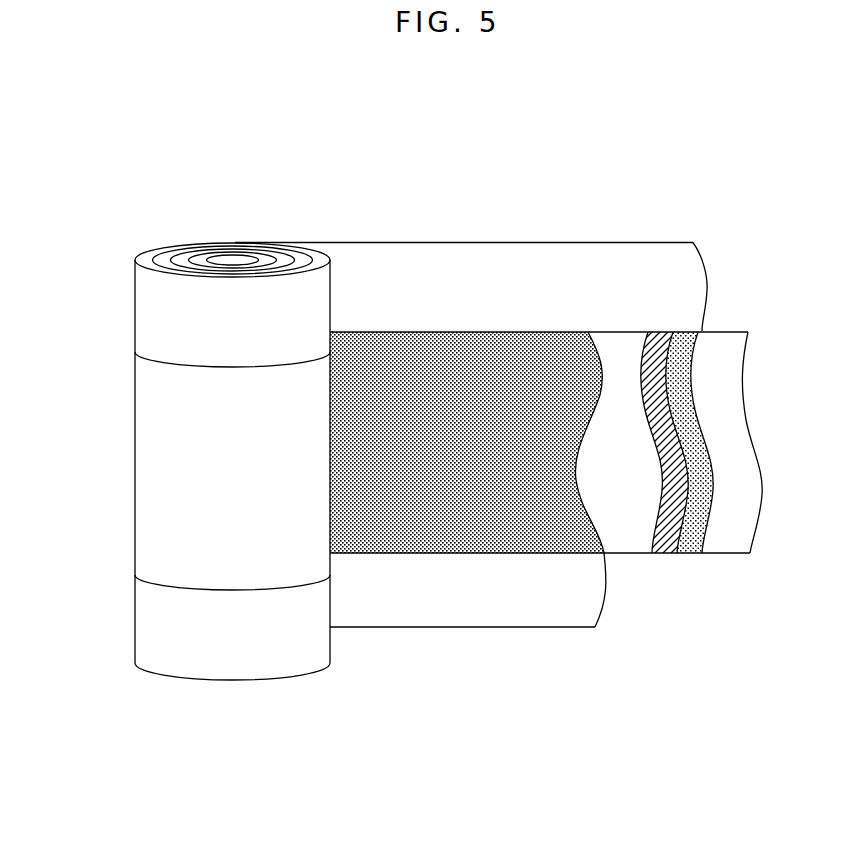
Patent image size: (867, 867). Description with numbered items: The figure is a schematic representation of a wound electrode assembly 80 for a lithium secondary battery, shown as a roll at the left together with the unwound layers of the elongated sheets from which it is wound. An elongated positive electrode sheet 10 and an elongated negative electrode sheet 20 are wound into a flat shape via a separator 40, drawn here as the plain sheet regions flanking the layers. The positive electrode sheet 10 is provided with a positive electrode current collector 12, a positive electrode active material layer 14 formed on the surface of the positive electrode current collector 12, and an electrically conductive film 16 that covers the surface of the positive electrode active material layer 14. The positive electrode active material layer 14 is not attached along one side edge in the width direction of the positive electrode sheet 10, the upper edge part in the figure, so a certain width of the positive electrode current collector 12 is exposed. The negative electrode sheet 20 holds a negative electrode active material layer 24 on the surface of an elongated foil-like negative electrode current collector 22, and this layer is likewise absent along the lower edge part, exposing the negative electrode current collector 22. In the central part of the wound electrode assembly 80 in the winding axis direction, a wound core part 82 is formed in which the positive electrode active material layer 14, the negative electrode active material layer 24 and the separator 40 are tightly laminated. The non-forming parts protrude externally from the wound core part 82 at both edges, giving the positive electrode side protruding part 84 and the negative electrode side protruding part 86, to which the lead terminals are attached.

The positive electrode sheet 10 is at (515, 243).
The positive electrode current collector 12 is at (590, 270).
The positive electrode active material layer 14 is at (683, 342).
The electrically conductive film 16 is at (664, 553).
The negative electrode sheet 20 is at (369, 628).
The negative electrode current collector 22 is at (454, 610).
The negative electrode active material layer 24 is at (550, 540).
The separator 40 is at (627, 532).
The wound electrode assembly 80 is at (158, 240).
The wound core part 82 is at (153, 447).
The positive electrode side protruding part 84 is at (153, 320).
The negative electrode side protruding part 86 is at (153, 633).